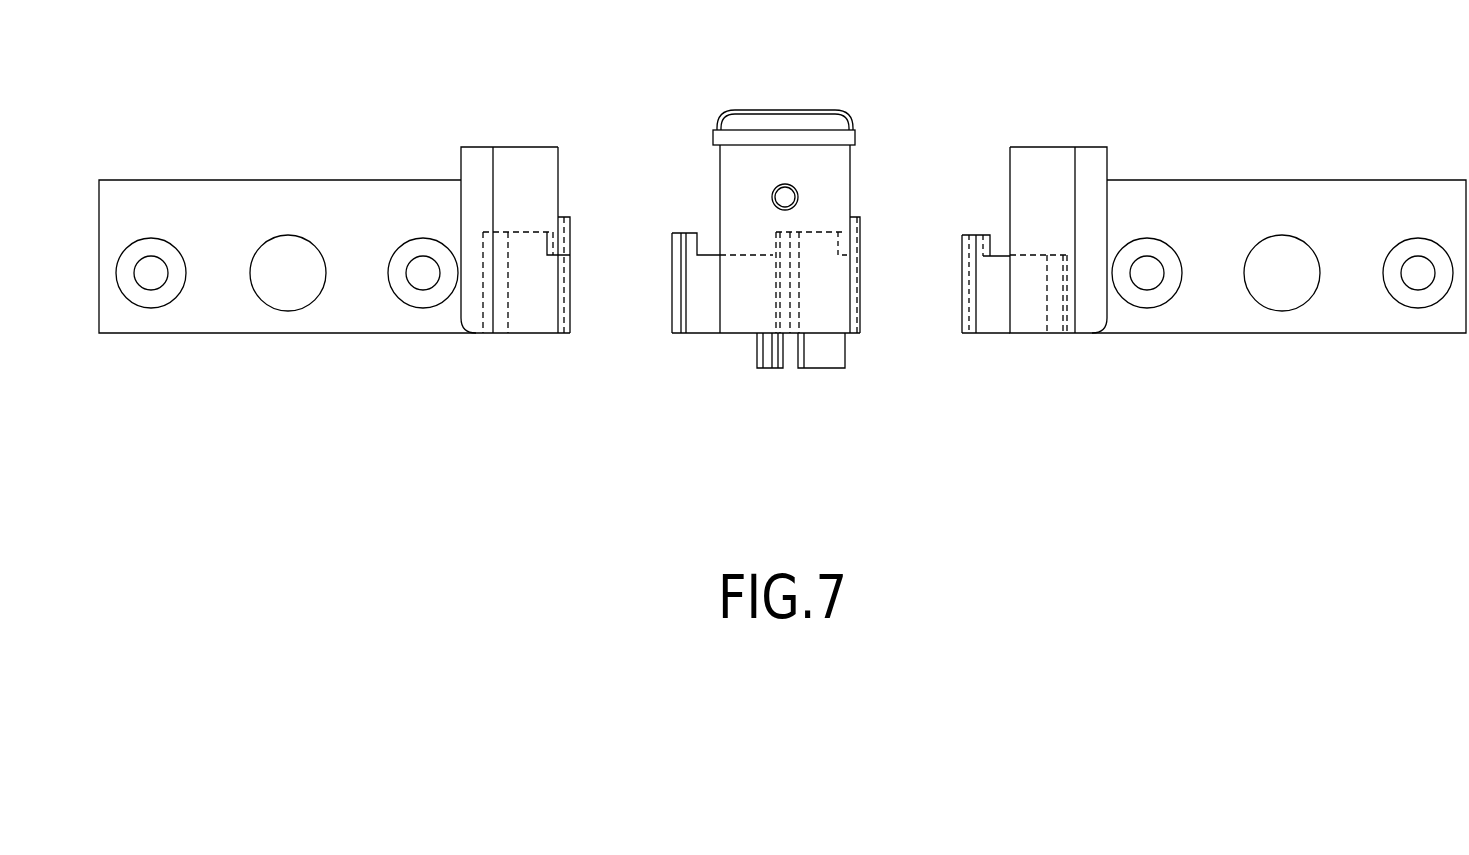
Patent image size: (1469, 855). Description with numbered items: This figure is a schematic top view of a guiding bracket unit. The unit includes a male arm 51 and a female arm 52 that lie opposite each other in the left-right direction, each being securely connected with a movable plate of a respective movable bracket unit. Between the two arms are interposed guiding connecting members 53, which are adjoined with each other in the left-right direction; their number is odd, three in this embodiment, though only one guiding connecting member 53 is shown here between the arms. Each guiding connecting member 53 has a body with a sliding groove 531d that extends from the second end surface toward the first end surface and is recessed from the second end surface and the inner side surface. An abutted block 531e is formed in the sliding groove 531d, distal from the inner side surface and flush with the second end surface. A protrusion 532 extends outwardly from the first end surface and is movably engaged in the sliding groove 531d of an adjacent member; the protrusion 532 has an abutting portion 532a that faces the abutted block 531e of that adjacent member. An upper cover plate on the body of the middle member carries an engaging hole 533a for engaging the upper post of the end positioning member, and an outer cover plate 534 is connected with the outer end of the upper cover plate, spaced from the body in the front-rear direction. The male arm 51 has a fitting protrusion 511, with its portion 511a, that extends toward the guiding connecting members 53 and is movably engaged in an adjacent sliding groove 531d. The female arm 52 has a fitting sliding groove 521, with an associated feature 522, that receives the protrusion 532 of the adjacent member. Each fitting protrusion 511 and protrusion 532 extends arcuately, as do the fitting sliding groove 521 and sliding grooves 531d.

The male arm 51 is at (1290, 178).
The fitting protrusion 511 is at (992, 334).
The first engaging tab 511a is at (975, 236).
The female arm 52 is at (228, 179).
The fitting sliding groove 521 is at (537, 318).
The notch 522 is at (545, 243).
The guiding connecting member 53 is at (733, 100).
The sliding groove 531d is at (810, 318).
The abutted block 531e is at (838, 245).
The protrusion 532 is at (692, 334).
The abutting portion 532a is at (683, 236).
The engaging hole 533a is at (780, 185).
The outer cover plate 534 is at (820, 111).